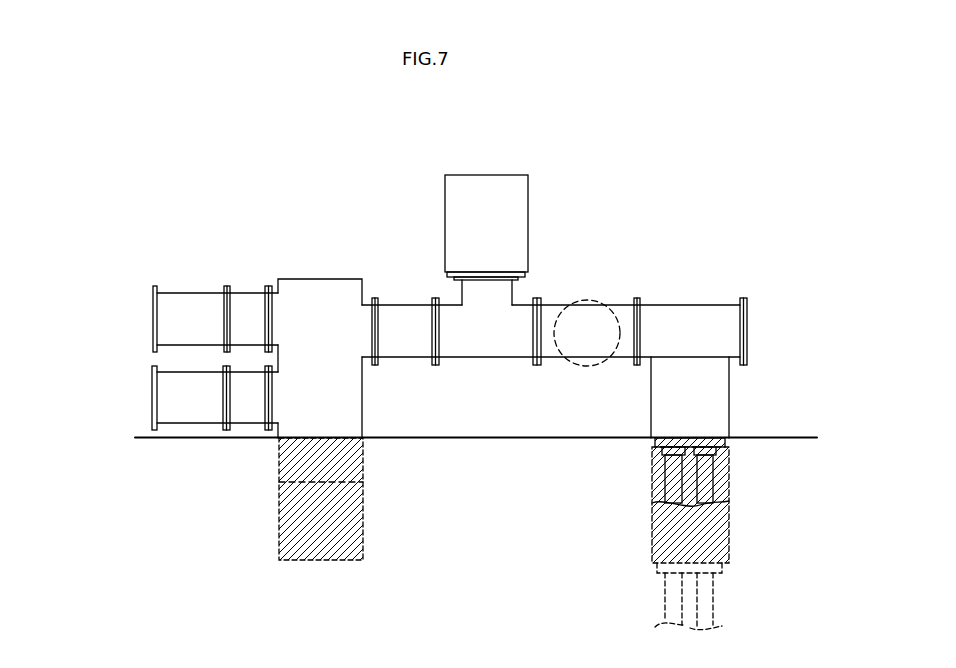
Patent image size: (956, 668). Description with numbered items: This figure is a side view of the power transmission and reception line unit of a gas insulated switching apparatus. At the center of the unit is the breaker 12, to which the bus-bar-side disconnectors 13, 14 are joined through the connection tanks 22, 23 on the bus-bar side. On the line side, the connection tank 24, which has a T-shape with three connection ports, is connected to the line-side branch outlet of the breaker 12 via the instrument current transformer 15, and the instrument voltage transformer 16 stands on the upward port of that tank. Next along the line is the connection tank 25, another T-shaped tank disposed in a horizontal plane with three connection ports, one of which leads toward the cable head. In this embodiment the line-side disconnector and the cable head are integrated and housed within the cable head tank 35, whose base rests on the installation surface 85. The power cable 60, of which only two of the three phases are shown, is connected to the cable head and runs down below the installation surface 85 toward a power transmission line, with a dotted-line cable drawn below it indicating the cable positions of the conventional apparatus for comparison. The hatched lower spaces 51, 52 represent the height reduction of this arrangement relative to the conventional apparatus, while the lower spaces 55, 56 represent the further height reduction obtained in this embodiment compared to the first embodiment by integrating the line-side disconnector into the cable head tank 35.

The breaker 12 is at (363, 390).
The bus-bar-side disconnector 13 is at (180, 372).
The bus-bar-side disconnector 14 is at (192, 292).
The instrument current transformer 15 is at (402, 305).
The instrument voltage transformer 16 is at (487, 174).
The connection tank 22 is at (247, 292).
The connection tank 23 is at (247, 427).
The connection tank 24 is at (487, 358).
The connection tank 25 is at (623, 302).
The cable head tank 35 is at (694, 305).
The lower space 51 is at (363, 520).
The lower space 52 is at (730, 520).
The lower space 55 is at (363, 470).
The lower space 56 is at (730, 470).
The power cable 60 is at (670, 478).
The installation surface 85 is at (778, 436).